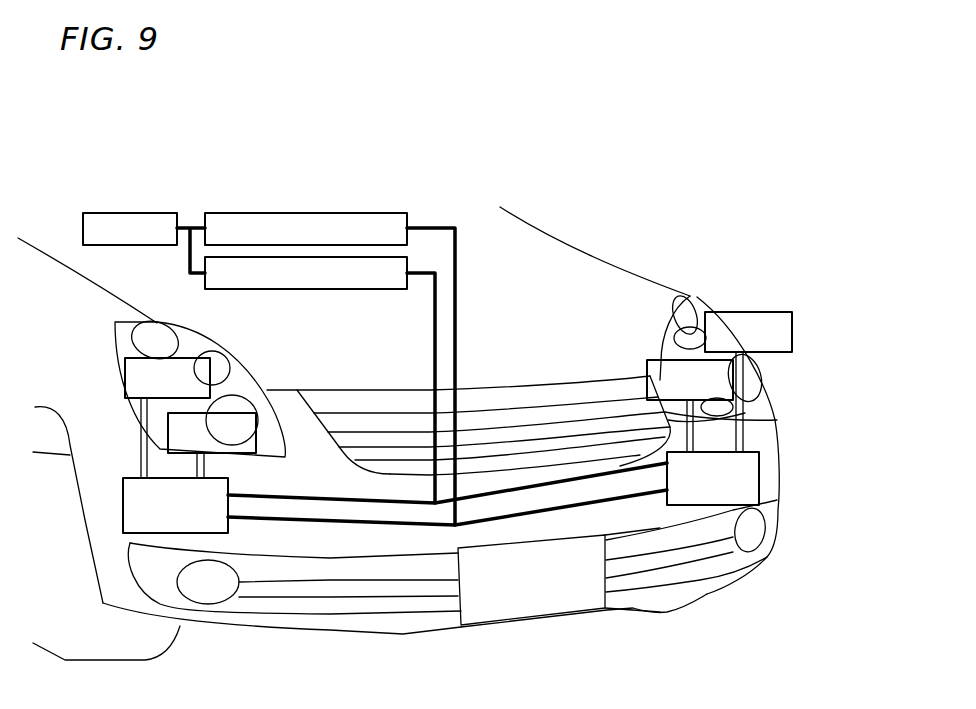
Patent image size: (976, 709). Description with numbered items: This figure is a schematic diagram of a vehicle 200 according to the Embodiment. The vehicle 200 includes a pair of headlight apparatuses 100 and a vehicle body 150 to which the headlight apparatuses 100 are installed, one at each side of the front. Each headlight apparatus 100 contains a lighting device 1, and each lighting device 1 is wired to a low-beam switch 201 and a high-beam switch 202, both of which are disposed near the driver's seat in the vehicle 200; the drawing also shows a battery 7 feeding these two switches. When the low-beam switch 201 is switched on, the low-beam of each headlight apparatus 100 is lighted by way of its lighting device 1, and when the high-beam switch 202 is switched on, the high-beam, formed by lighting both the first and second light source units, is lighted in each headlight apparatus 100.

The lighting device 1 is at (131, 475).
The battery 7 is at (128, 213).
The headlight apparatus 100 is at (113, 338).
The vehicle body 150 is at (563, 268).
The vehicle 200 is at (405, 640).
The low-beam switch 201 is at (320, 213).
The high-beam switch 202 is at (322, 290).